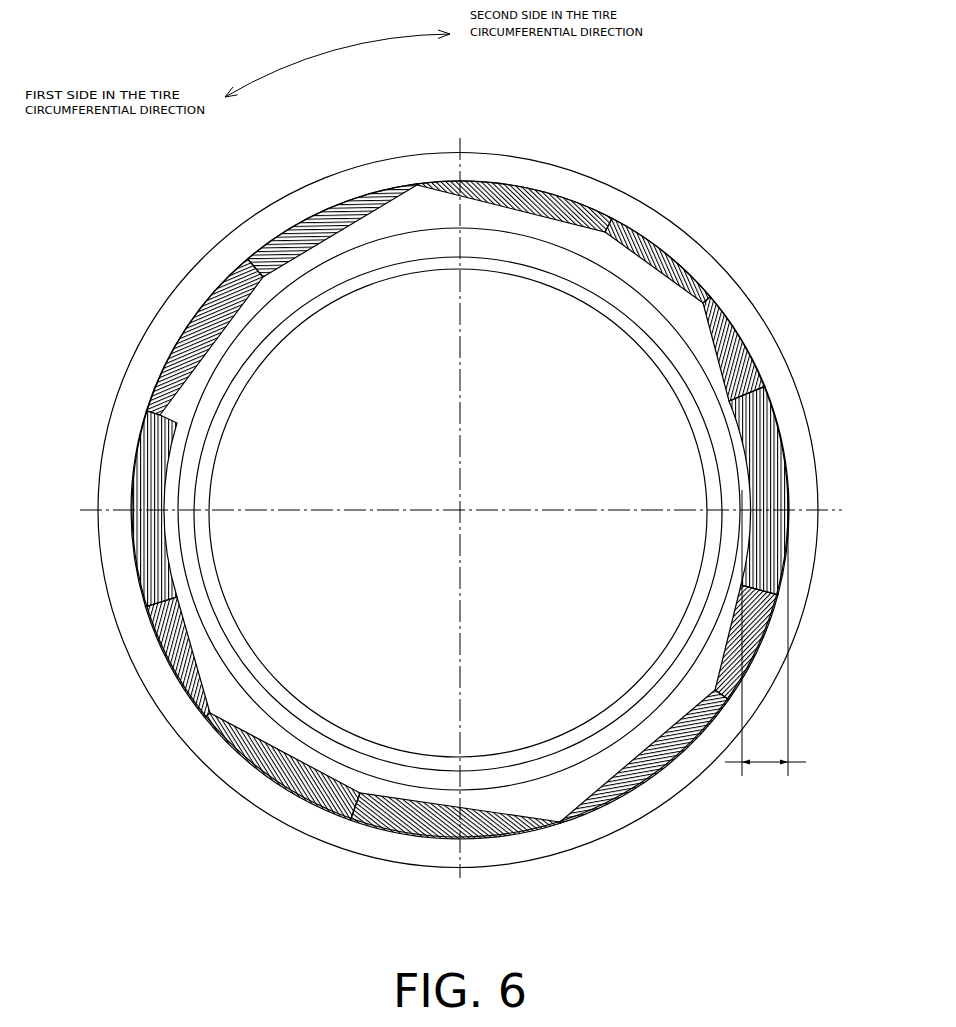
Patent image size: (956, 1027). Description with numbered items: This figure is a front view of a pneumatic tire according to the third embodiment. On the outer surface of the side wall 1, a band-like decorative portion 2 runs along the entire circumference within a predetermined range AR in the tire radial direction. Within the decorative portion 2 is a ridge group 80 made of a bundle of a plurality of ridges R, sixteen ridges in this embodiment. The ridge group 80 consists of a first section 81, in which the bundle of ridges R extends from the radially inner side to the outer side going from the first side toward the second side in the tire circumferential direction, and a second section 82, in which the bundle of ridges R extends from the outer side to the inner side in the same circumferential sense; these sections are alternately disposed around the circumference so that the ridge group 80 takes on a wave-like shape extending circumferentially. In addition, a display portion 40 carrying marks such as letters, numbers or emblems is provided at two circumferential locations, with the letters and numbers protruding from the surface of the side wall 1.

The side wall 1 is at (593, 183).
The decorative portion 2 is at (634, 296).
The display portion 40 is at (132, 489).
The ridge group 80 is at (457, 465).
The first section 81 is at (355, 210).
The second section 82 is at (524, 198).
The ridge R is at (237, 315).
The predetermined range AR is at (776, 632).